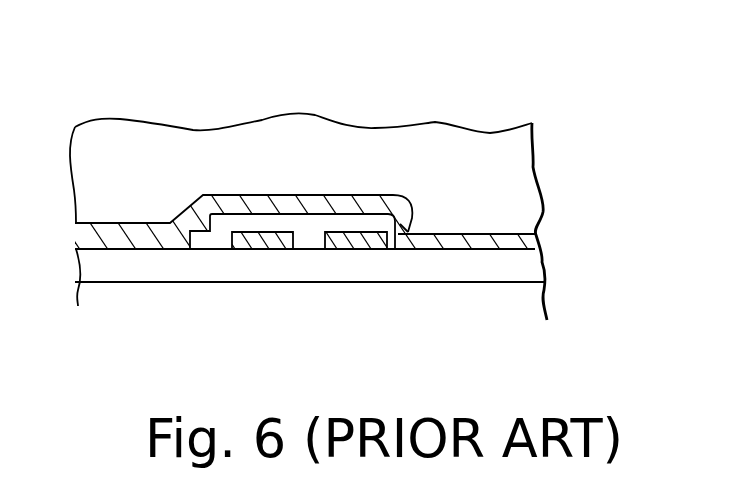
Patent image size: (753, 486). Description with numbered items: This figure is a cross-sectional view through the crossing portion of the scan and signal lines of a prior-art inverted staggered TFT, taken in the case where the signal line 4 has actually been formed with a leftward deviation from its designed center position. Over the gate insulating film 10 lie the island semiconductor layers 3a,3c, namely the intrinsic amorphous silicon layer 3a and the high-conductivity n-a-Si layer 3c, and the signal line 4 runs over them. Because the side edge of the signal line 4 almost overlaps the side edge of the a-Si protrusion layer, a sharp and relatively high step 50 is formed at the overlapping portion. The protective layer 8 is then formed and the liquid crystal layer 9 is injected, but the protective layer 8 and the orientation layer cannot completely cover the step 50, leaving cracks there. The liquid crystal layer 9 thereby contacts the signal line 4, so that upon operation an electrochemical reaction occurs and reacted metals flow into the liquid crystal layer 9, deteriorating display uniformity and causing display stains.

The signal line 4 is at (310, 223).
The liquid crystal layer 9 is at (417, 137).
The step 50 is at (412, 230).
The protective layer 8 is at (533, 236).
The island a-Si layer and island n-a-Si layer 3a,3c is at (314, 286).
The intrinsic amorphous silicon layer 3a is at (262, 240).
The n+ amorphous silicon layer 3c is at (335, 243).
The gate insulating film 10 is at (517, 273).